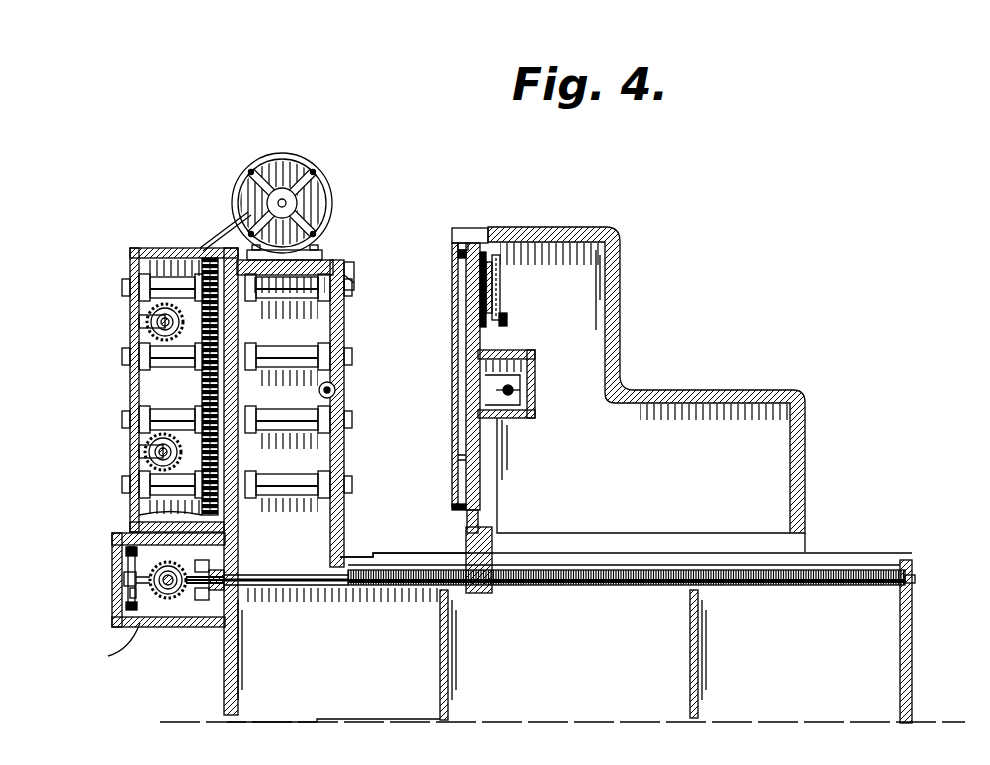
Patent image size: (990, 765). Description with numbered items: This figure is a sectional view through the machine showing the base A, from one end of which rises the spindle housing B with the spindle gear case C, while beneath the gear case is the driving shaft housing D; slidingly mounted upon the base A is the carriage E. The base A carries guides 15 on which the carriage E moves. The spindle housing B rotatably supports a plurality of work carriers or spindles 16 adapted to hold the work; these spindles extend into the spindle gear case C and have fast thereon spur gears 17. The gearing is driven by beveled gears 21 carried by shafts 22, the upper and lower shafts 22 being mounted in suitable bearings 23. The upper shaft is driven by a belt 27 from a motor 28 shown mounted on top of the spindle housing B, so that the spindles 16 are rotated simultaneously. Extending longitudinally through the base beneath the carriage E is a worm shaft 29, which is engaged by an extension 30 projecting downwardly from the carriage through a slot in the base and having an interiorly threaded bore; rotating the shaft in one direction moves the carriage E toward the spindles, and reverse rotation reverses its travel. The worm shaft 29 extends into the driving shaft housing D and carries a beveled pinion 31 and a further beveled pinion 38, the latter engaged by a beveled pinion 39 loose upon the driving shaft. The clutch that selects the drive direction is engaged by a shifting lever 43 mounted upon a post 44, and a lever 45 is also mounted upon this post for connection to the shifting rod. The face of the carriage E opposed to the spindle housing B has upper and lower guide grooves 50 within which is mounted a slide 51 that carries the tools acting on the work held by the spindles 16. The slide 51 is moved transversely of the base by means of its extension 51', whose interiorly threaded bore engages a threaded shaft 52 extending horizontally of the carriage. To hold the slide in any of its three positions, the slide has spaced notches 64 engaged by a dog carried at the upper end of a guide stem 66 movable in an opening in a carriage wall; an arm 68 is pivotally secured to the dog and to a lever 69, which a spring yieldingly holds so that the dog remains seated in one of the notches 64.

The guides 15 is at (428, 556).
The work carriers or spindles 16 is at (279, 367).
The spur gears 17 is at (198, 261).
The beveled gears 21 is at (139, 300).
The shafts 22 is at (140, 323).
The bearings 23 is at (139, 452).
The belt 27 is at (222, 231).
The motor 28 is at (331, 193).
The worm shaft 29 is at (650, 586).
The extension 30 is at (479, 596).
The beveled pinion 31 is at (205, 601).
The beveled pinion 38 is at (186, 599).
The beveled pinion 39 is at (173, 564).
The shifting lever 43 is at (126, 590).
The post 44 is at (124, 573).
The lever 45 is at (122, 549).
The guide grooves 50 is at (489, 230).
The slide 51 is at (446, 376).
The extension 51' is at (530, 384).
The threaded shaft 52 is at (515, 392).
The notches 64 is at (462, 232).
The guide stem 66 is at (494, 289).
The arm 68 is at (500, 272).
The lever 69 is at (507, 321).
The base A is at (562, 638).
The spindle housing B is at (295, 413).
The spindle gear case C is at (184, 481).
The driving shaft housing D is at (154, 600).
The carriage E is at (646, 389).